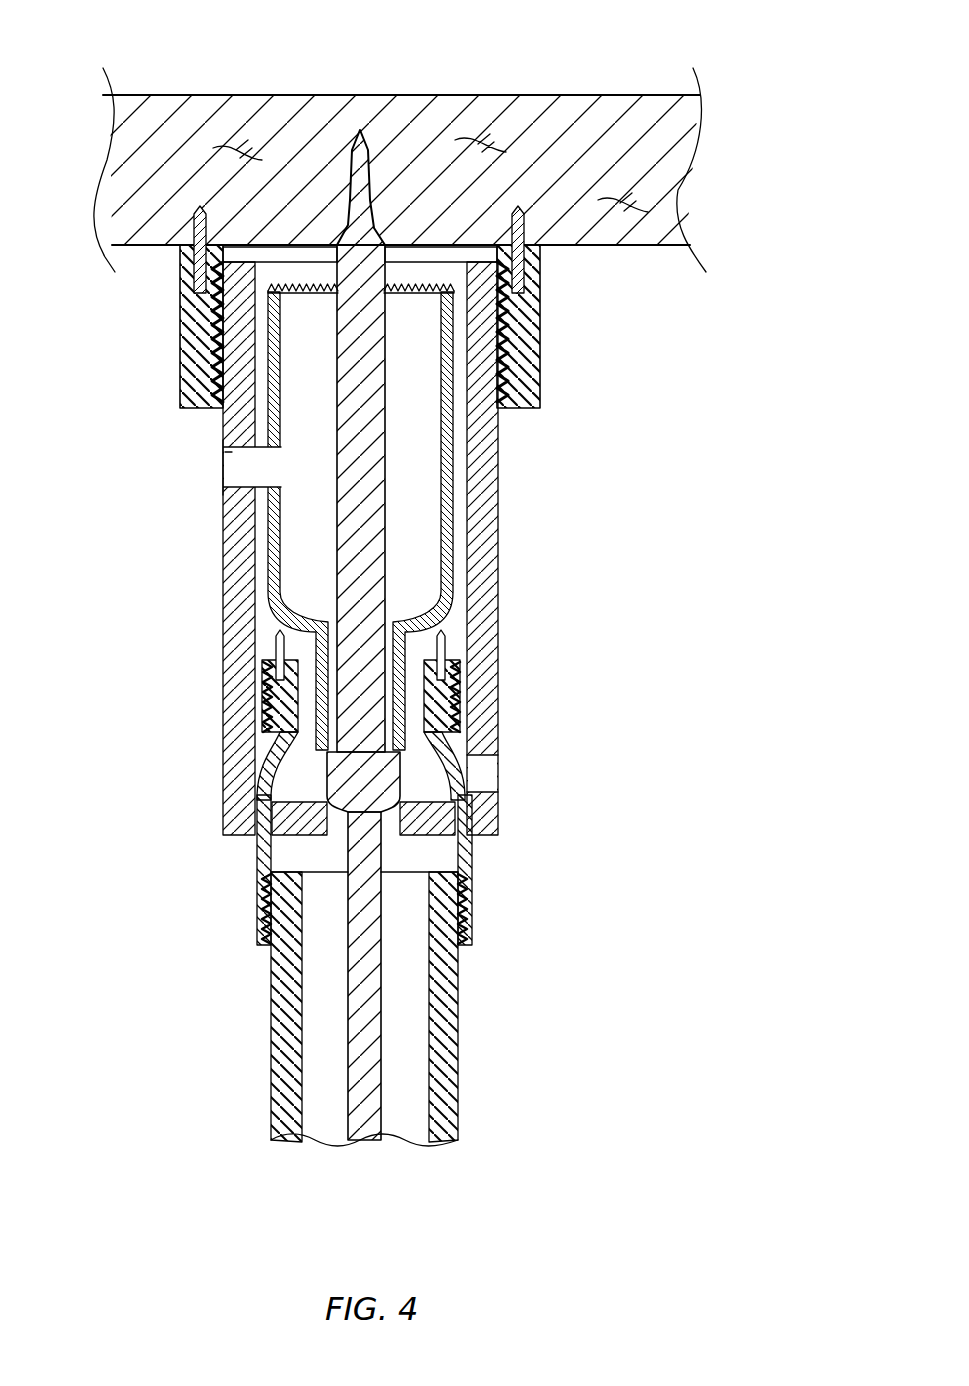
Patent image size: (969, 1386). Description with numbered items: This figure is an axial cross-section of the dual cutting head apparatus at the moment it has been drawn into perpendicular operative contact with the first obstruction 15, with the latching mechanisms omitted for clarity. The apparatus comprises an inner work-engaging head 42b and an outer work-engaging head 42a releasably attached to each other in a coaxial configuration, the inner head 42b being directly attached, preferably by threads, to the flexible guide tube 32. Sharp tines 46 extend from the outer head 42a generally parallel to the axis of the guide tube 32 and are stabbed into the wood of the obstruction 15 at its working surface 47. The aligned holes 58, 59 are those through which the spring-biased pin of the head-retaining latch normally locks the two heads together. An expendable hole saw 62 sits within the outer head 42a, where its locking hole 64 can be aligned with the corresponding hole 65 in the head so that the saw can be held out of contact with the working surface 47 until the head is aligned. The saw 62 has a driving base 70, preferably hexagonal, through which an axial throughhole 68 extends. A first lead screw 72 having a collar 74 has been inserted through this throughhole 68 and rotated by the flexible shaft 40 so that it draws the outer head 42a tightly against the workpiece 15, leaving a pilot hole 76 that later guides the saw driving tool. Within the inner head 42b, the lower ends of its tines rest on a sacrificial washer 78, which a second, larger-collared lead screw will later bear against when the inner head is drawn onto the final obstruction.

The first obstruction 15 is at (648, 142).
The pilot hole 76 is at (378, 216).
The working surface 47 is at (147, 245).
The tines 46 is at (519, 232).
The outer work-engaging head 42a is at (492, 578).
The hole saw 62 is at (445, 512).
The locking hole 64 is at (267, 472).
The corresponding hole 65 is at (232, 452).
The first lead screw 72 is at (370, 452).
The collar 74 is at (333, 773).
The axial throughhole 68 is at (330, 618).
The driving base 70 is at (440, 617).
The aligned hole 59 is at (450, 770).
The aligned hole 58 is at (497, 780).
The sacrificial washer 78 is at (422, 836).
The inner work-engaging head 42b is at (246, 902).
The guide tube 32 is at (458, 1010).
The flexible shaft 40 is at (367, 1135).